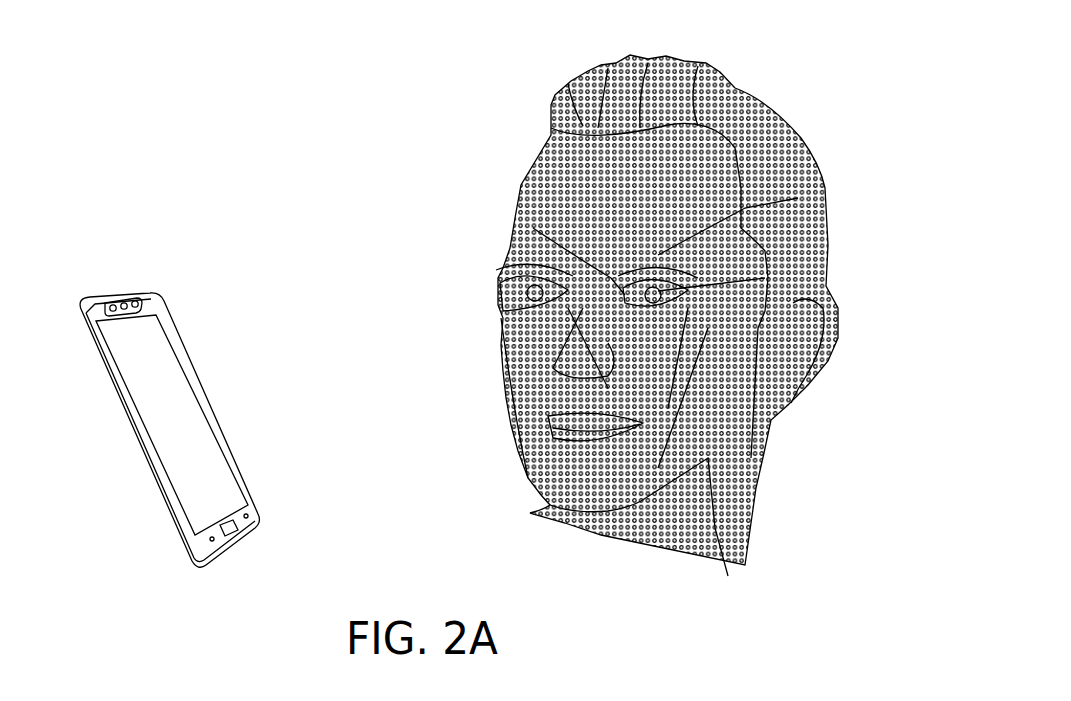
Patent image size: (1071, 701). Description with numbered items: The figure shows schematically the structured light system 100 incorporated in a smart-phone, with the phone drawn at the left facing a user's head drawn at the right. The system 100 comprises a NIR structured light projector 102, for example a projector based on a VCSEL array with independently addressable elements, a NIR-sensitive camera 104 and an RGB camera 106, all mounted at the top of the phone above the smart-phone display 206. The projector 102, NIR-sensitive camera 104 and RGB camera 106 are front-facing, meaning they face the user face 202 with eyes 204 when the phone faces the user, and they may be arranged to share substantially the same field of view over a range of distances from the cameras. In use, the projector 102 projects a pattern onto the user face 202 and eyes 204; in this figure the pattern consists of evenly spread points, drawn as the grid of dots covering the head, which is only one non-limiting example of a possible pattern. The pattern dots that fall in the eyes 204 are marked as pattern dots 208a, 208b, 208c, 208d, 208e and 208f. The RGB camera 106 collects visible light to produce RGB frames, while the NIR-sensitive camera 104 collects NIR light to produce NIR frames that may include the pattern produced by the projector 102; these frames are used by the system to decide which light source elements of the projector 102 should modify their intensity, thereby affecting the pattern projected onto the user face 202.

The system 100 is at (178, 382).
The NIR structured light projector 102 is at (97, 294).
The NIR-sensitive camera 104 is at (114, 294).
The RGB camera 106 is at (128, 293).
The user face 202 is at (513, 178).
The eyes 204 is at (525, 220).
The smart-phone display 206 is at (183, 397).
The pattern dot 208a is at (495, 295).
The pattern dot 208b is at (495, 302).
The pattern dot 208c is at (496, 307).
The pattern dot 208d is at (498, 312).
The pattern dot 208e is at (492, 273).
The pattern dot 208f is at (493, 310).